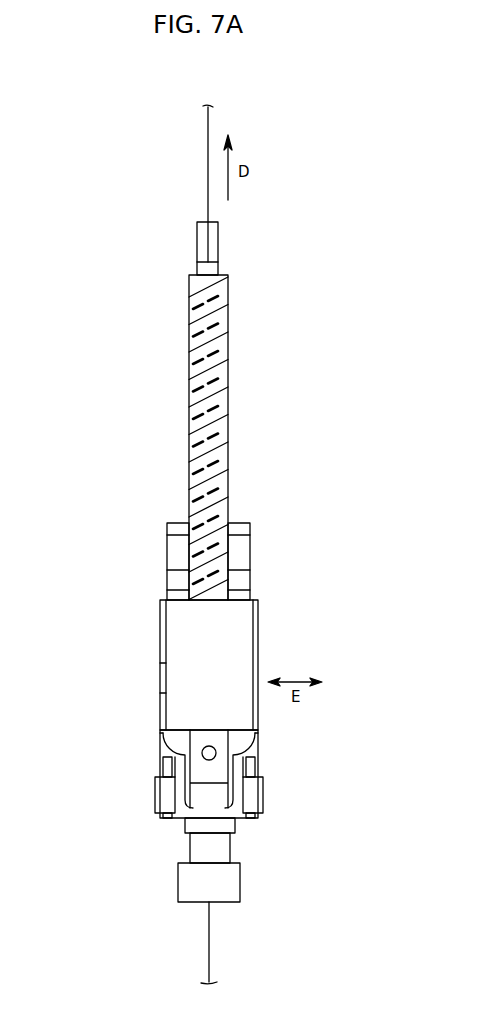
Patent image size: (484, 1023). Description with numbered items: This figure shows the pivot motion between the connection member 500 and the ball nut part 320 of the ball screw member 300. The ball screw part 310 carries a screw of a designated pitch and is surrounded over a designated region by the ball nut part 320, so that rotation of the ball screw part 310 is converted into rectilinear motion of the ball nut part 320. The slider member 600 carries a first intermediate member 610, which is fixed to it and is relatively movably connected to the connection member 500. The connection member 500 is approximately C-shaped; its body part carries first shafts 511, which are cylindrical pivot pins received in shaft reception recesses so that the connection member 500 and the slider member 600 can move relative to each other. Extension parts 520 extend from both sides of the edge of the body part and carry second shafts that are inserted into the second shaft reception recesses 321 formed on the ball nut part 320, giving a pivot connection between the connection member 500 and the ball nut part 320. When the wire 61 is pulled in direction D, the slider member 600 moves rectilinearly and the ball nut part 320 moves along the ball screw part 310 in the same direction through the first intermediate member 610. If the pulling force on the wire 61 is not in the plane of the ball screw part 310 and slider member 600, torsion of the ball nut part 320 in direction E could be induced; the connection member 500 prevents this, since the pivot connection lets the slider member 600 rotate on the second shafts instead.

The wire 61 is at (208, 152).
The ball screw member 300 is at (238, 328).
The ball screw part 310 is at (223, 365).
The slider member 600 is at (242, 543).
The ball nut part 320 is at (242, 623).
The connection member 500 is at (258, 743).
The extension parts 520 is at (165, 745).
The first intermediate member 610 is at (163, 768).
The first shafts 511 is at (163, 800).
The second shaft reception recesses 321 is at (217, 752).